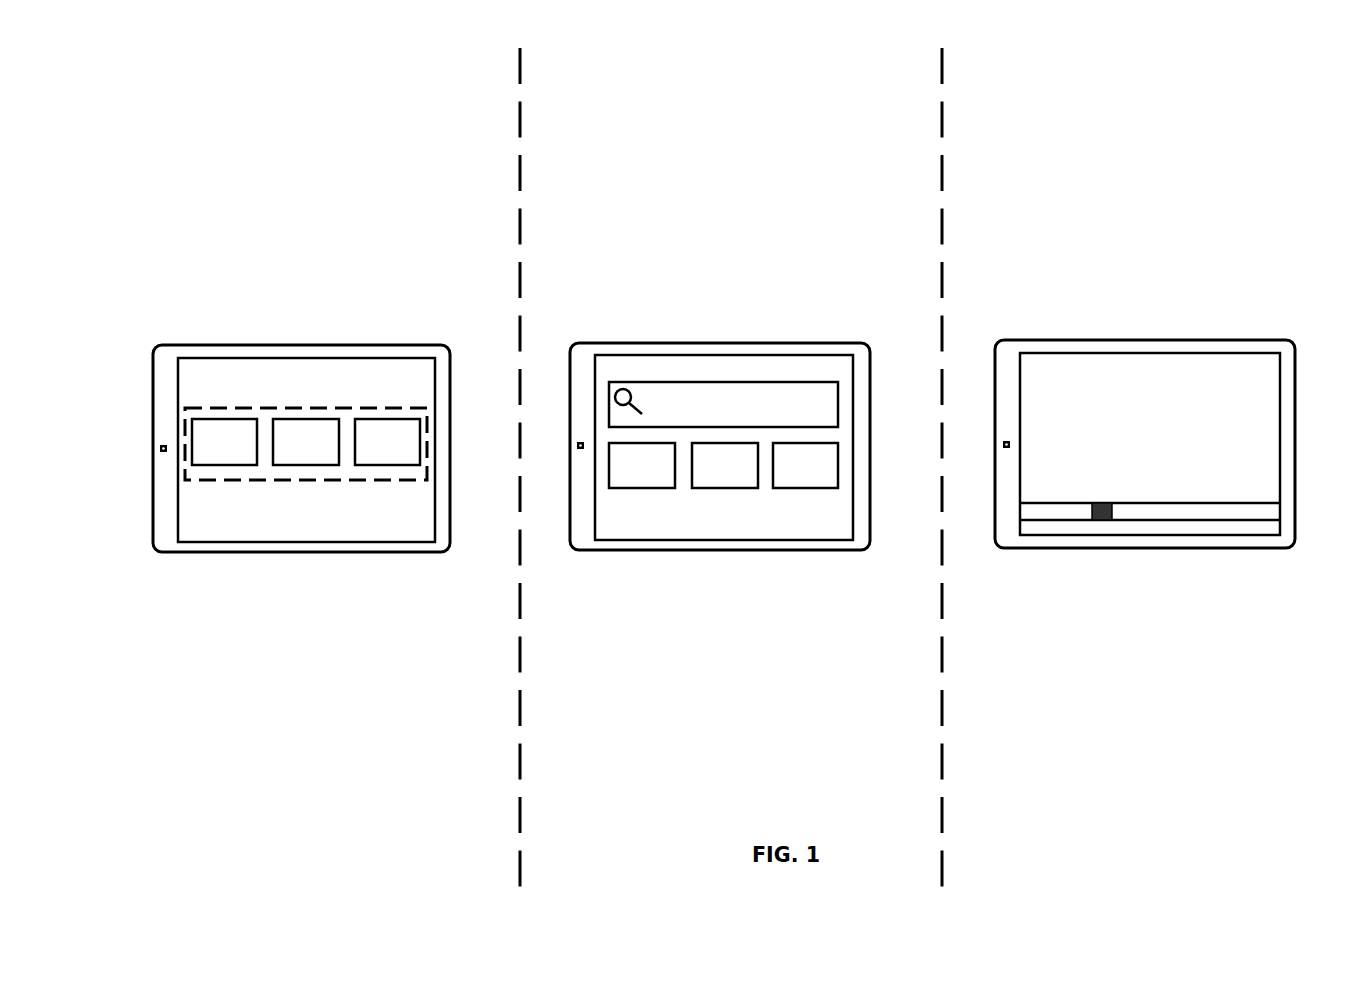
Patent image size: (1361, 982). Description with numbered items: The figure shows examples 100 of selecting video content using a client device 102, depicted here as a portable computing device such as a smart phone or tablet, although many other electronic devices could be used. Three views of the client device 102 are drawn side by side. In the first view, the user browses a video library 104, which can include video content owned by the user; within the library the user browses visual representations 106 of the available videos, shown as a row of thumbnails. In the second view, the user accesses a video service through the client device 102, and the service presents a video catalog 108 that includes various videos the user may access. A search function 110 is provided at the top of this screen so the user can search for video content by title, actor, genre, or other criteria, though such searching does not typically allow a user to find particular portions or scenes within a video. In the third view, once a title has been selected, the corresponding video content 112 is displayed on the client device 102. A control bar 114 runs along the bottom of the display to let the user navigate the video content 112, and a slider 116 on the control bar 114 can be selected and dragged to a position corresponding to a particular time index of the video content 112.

The examples of selecting video content 100 is at (1303, 119).
The client device 102 is at (403, 345).
The video library 104 is at (297, 533).
The visual representations 106 is at (307, 405).
The video catalog 108 is at (710, 530).
The search function 110 is at (727, 381).
The video content 112 is at (1150, 381).
The control bar 114 is at (1160, 520).
The slider 116 is at (1100, 520).